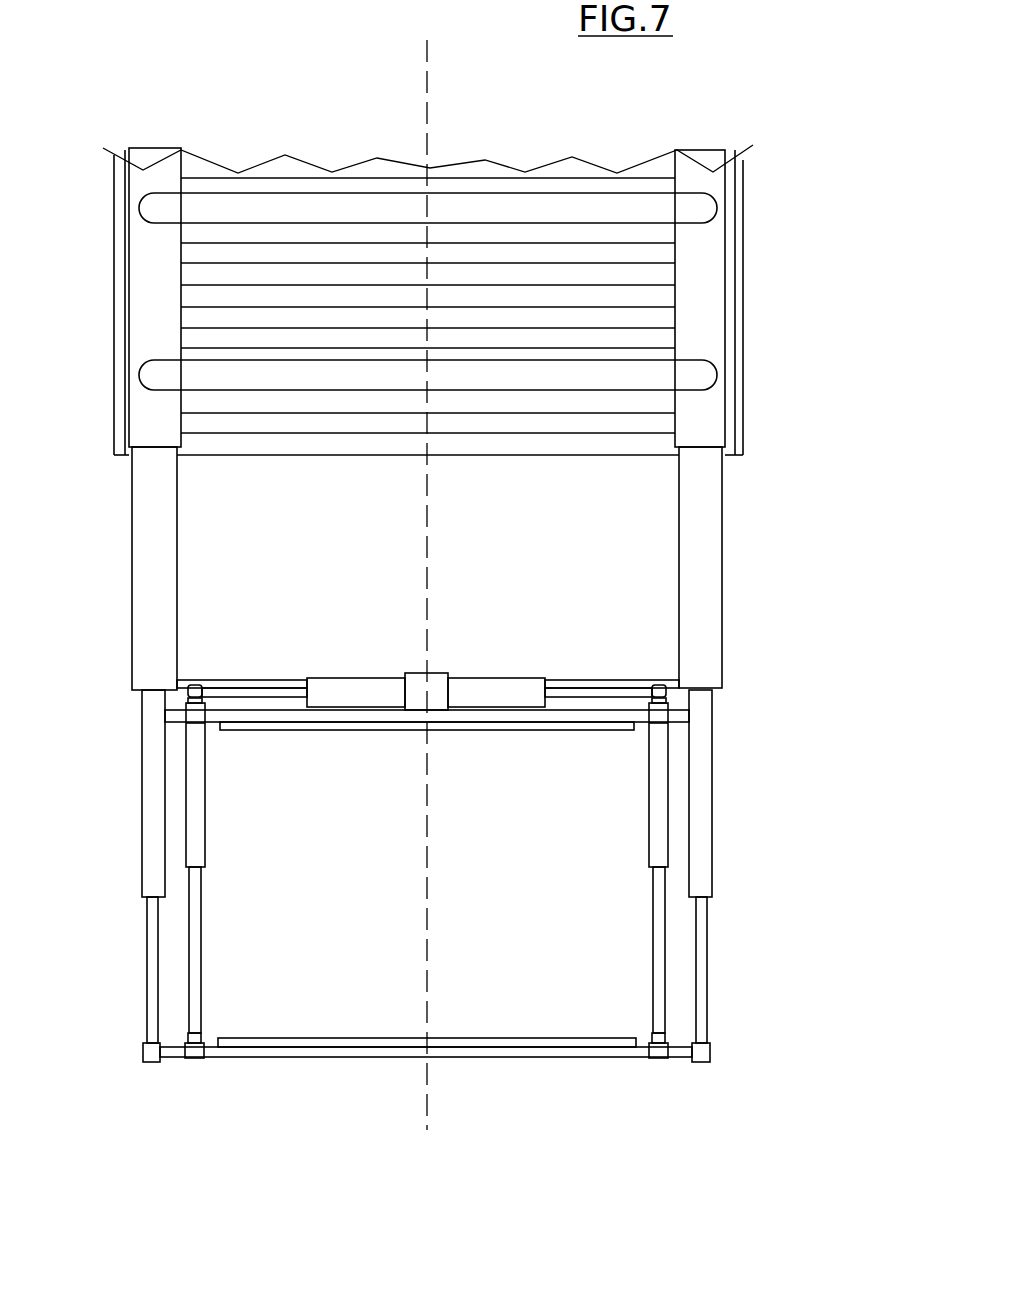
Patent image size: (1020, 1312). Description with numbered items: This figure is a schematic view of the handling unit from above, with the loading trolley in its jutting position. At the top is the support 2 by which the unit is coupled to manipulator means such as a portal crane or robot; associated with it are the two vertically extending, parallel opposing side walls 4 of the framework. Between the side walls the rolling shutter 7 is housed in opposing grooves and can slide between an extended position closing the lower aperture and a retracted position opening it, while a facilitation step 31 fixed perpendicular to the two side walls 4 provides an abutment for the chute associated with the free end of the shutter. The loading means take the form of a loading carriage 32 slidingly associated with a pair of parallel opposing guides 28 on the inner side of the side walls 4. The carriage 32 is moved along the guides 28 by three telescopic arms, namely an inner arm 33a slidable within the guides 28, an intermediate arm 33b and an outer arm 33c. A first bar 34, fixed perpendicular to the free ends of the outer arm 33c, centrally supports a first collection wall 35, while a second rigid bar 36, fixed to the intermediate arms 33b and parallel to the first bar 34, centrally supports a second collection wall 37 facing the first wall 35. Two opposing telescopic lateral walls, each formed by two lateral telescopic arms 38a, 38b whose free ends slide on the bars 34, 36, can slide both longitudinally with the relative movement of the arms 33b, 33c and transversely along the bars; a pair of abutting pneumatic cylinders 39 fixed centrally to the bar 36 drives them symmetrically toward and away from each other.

The support 2 is at (690, 208).
The side walls 4 is at (132, 165).
The rolling shutter 7 is at (258, 302).
The guides 28 is at (124, 462).
The facilitation step 31 is at (258, 682).
The loading carriage 32 is at (429, 935).
The inner arm 33a is at (145, 595).
The intermediate arm 33b is at (150, 808).
The outer arm 33c is at (152, 960).
The first bar 34 is at (233, 1058).
The first collection wall 35 is at (312, 1035).
The second rigid bar 36 is at (596, 722).
The second collection wall 37 is at (400, 732).
The lateral telescopic arm 38a is at (207, 805).
The lateral telescopic arm 38b is at (205, 957).
The pneumatic cylinders 39 is at (362, 688).